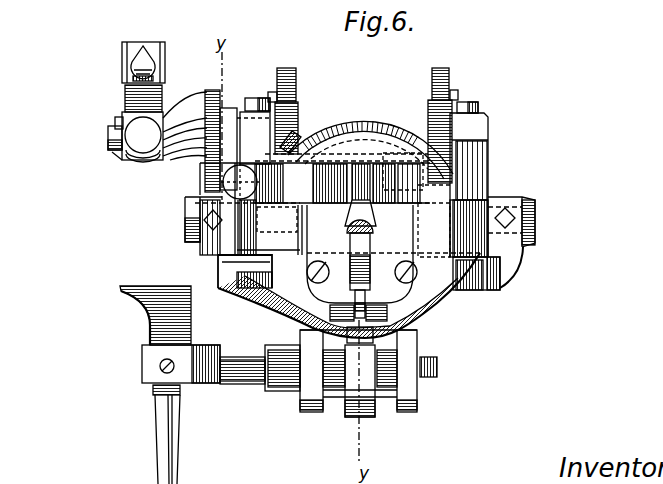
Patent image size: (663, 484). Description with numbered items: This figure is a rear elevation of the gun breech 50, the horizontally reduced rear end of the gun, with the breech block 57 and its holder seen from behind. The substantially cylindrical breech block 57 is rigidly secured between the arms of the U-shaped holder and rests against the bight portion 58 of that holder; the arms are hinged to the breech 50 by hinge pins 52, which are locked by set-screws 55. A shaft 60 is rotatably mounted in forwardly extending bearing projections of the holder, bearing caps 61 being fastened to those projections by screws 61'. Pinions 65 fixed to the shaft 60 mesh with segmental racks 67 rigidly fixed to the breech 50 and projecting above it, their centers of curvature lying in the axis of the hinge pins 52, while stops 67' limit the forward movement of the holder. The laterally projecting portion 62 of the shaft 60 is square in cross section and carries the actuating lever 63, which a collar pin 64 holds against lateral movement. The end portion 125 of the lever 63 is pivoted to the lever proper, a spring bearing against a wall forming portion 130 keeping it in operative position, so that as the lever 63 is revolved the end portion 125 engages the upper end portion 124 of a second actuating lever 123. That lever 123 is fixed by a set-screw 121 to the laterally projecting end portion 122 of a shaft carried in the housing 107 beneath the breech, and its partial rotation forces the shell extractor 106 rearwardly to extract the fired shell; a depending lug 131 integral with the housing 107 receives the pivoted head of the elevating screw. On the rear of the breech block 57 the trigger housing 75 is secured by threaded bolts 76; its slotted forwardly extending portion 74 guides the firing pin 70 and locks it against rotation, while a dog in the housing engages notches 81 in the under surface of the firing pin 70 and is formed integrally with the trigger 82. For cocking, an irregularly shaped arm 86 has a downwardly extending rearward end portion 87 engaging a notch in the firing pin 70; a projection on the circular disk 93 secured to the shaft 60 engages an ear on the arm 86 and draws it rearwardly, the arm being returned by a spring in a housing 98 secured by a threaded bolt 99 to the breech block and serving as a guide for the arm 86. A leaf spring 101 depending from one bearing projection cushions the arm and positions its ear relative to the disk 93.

The wall forming portion 130 is at (147, 50).
The end portion of the lever 125 is at (166, 65).
The collar pin 64 is at (118, 123).
The laterally projecting portion of the shaft 62 is at (138, 135).
The actuating lever 63 is at (112, 153).
The leaf spring 101 is at (220, 128).
The circular disk 93 is at (225, 113).
The stops 67' is at (374, 74).
The segmental racks 67 is at (376, 113).
The pinions 65 is at (298, 112).
The threaded bolt 99 is at (297, 136).
The breech 50 is at (344, 128).
The breech block 57 is at (377, 150).
The shaft 60 is at (414, 115).
The screws 61' is at (494, 87).
The bearing caps 61 is at (492, 184).
The arm 86 is at (303, 170).
The rearward end portion of the arm 87 is at (318, 208).
The slotted forwardly extending portion 74 is at (387, 207).
The firing pin 70 is at (370, 230).
The notches 81 is at (350, 238).
The trigger 82 is at (372, 262).
The threaded bolts 76 is at (308, 272).
The trigger housing 75 is at (320, 290).
The bight portion 58 is at (445, 215).
The hinge pins 52 is at (538, 212).
The set-screws 55 is at (510, 210).
The housing 98 is at (220, 186).
The shell extractor 106 is at (425, 340).
The depending lug 131 is at (370, 418).
The housing 107 is at (298, 392).
The laterally projecting end portion of the shaft 122 is at (235, 385).
The set-screw 121 is at (160, 368).
The upper end portion of the lever 124 is at (133, 300).
The actuating lever 123 is at (162, 466).